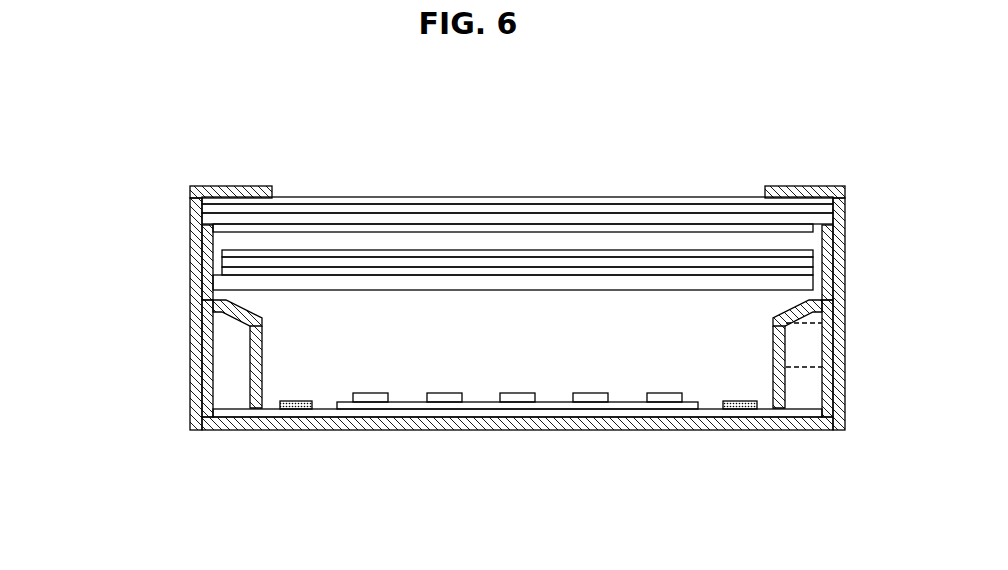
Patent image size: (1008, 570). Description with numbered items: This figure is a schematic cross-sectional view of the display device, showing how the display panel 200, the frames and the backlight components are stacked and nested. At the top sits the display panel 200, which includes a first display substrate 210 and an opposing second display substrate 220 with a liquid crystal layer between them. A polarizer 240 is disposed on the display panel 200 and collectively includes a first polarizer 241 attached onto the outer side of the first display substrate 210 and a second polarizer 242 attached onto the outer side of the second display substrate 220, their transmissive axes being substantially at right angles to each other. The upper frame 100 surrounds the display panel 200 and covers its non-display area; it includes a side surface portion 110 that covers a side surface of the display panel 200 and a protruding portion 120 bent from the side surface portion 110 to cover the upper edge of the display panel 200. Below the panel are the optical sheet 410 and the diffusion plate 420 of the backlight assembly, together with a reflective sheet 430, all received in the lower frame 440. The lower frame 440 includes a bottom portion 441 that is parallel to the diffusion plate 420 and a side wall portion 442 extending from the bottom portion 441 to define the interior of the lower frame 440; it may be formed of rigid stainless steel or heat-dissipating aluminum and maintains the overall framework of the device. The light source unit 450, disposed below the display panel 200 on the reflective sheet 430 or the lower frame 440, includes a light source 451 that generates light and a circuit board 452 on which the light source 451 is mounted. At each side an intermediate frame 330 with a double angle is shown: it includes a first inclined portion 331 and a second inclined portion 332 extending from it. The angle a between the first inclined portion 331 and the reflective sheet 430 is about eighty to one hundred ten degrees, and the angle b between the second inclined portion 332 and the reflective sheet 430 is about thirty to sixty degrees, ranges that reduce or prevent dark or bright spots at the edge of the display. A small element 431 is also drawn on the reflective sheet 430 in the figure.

The upper frame 100 is at (454, 297).
The side surface portion 110 is at (484, 314).
The protruding portion 120 is at (236, 189).
The display panel 200 is at (517, 163).
The first display substrate 210 is at (343, 142).
The second display substrate 220 is at (338, 208).
The polarizer 240 is at (517, 167).
The first polarizer 241 is at (482, 142).
The second polarizer 242 is at (477, 200).
The intermediate frame 330 is at (443, 348).
The first inclined portion 331 is at (254, 350).
The second inclined portion 332 is at (242, 308).
The optical sheet 410 is at (712, 272).
The diffusion plate 420 is at (598, 282).
The reflective sheet 430 is at (798, 417).
The adhesive member 431 is at (738, 409).
The lower frame 440 is at (449, 376).
The bottom portion 441 is at (257, 431).
The side wall portion 442 is at (208, 372).
The light source unit 450 is at (517, 458).
The light source 451 is at (518, 398).
The circuit board 452 is at (580, 405).
The angle a is at (795, 366).
The angle b is at (798, 322).